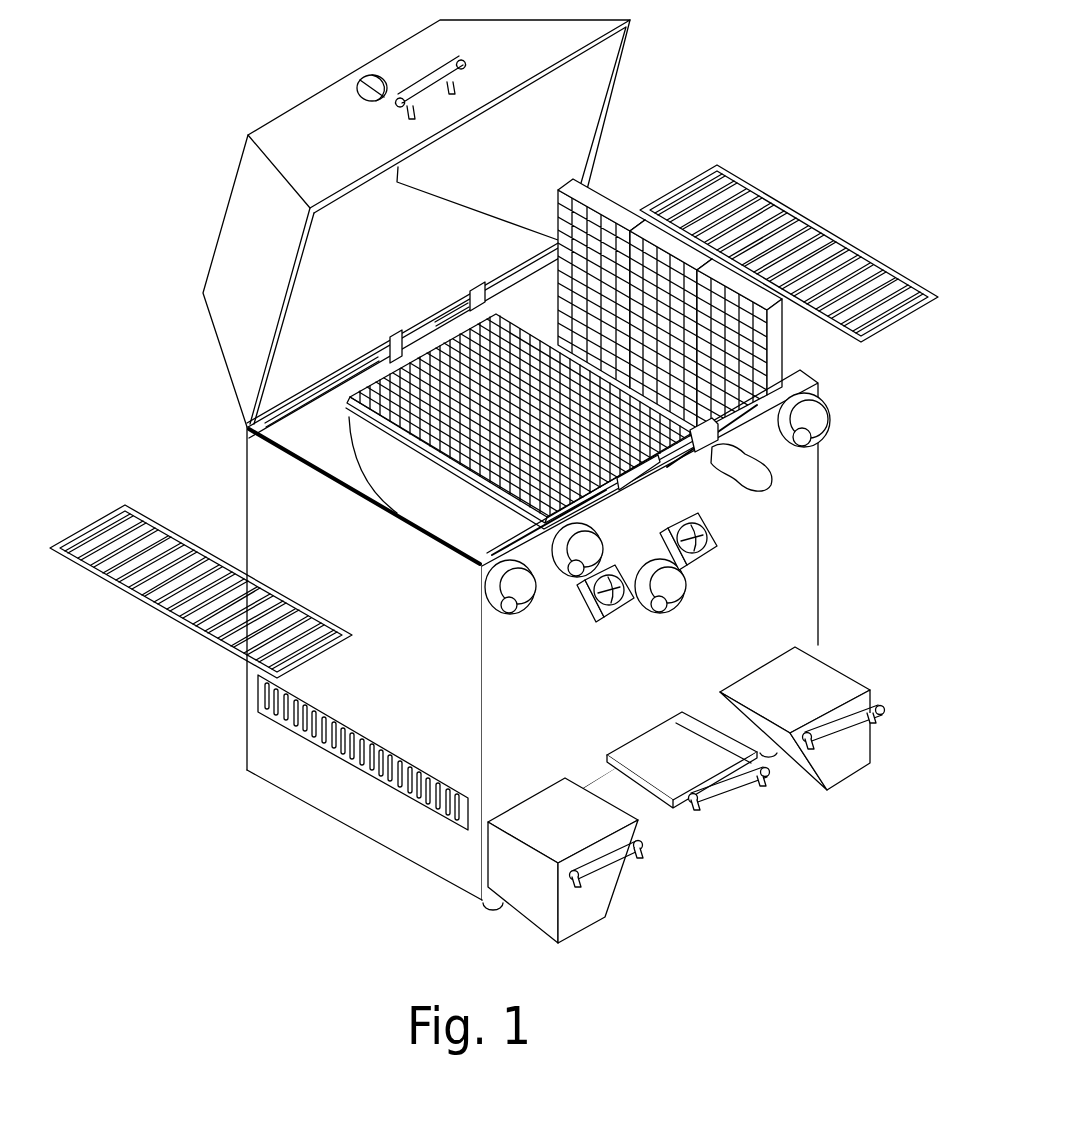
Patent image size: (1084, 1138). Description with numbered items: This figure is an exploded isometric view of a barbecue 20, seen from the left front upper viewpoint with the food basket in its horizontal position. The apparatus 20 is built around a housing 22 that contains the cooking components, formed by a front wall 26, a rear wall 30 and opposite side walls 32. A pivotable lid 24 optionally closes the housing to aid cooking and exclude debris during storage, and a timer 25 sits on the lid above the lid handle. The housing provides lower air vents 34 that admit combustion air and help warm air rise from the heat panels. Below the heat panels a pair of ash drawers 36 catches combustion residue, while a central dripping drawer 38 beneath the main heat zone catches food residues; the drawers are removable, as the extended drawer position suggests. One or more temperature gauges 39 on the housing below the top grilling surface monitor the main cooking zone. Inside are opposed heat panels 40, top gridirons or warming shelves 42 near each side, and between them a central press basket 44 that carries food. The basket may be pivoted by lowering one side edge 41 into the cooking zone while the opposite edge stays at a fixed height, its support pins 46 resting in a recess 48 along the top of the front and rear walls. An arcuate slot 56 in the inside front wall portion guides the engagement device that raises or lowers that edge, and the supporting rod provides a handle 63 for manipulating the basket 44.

The barbecue 20 is at (130, 208).
The housing 22 is at (245, 484).
The pivotable lid 24 is at (293, 115).
The timer 25 is at (374, 74).
The front wall 26 is at (819, 554).
The rear wall 30 is at (300, 435).
The side walls 32 is at (329, 810).
The lower air vents 34 is at (283, 724).
The ash drawers 36 is at (533, 915).
The central dripping drawer 38 is at (697, 810).
The temperature gauges 39 is at (608, 618).
The heat panels 40 is at (597, 192).
The side edge 41 is at (480, 486).
The warming shelves 42 is at (818, 218).
The press basket 44 is at (357, 365).
The support pins 46 is at (473, 313).
The recess 48 is at (428, 335).
The arcuate slot 56 is at (345, 488).
The handle 63 is at (770, 478).